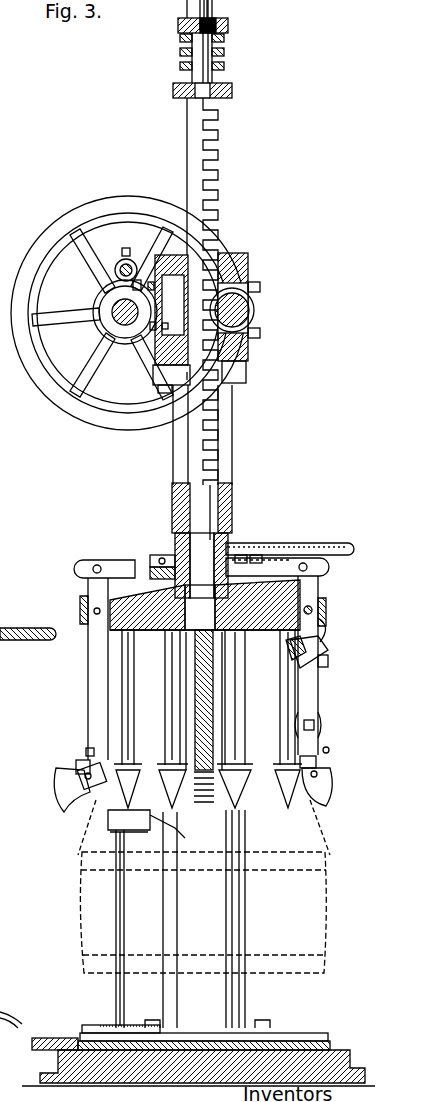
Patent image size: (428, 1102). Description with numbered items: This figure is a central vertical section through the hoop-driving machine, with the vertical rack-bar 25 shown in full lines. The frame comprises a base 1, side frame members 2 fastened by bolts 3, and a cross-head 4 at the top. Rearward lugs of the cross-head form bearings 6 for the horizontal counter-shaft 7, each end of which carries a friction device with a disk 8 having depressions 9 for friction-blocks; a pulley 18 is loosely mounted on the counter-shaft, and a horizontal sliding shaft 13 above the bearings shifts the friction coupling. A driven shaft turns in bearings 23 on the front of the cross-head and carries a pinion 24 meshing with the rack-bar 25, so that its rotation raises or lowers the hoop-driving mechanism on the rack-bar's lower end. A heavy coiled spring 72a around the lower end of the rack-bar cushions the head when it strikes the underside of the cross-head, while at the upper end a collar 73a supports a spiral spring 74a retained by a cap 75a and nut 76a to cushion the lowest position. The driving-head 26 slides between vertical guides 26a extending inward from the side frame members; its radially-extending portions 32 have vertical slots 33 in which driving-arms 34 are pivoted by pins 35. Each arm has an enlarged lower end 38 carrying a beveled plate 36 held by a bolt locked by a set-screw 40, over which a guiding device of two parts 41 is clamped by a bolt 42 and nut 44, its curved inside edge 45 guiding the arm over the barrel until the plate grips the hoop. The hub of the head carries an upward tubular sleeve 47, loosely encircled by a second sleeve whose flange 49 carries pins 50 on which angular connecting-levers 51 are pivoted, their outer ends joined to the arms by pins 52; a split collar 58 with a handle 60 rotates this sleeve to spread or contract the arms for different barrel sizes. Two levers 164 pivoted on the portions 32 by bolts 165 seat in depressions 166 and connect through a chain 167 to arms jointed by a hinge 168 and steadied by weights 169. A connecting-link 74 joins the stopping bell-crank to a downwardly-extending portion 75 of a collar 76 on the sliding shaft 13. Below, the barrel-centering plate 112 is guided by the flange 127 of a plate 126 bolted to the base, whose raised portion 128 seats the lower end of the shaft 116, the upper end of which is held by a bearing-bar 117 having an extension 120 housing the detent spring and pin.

The base 1 is at (58, 1064).
The side frame members 2 is at (203, 912).
The bolts 3 is at (207, 1013).
The top piece or cross-head 4 is at (242, 262).
The bearings 6 is at (108, 326).
The counter-shaft 7 is at (102, 298).
The disk 8 is at (102, 313).
The depressions 9 is at (11, 1008).
The horizontal sliding shaft 13 is at (121, 256).
The pulley 18 is at (128, 311).
The bearings 23 is at (256, 285).
The pinion 24 is at (248, 310).
The vertical rack-bar 25 is at (189, 291).
The driving-head or spider 26 is at (205, 618).
The vertically-extending guides 26a is at (203, 732).
The radially-extending portions 32 is at (80, 612).
The vertical slot 33 is at (86, 600).
The vertical driving-arm 34 is at (88, 703).
The pin 35 is at (94, 615).
The plate 36 is at (76, 767).
The enlarged lower end 38 is at (152, 766).
The set-screw 40 is at (86, 752).
The parts of guiding device 41 is at (203, 794).
The bolt 42 is at (318, 776).
The nut 44 is at (80, 782).
The curved inside edge 45 is at (310, 812).
The tubular portion or sleeve 47 is at (176, 556).
The flange 49 is at (152, 572).
The pins 50 is at (12, 549).
The angular-shaped connecting-levers 51 is at (83, 569).
The pins 52 is at (99, 557).
The split collar 58 is at (152, 560).
The operating handle or lever 60 is at (300, 547).
The heavy coiled spring 72a is at (233, 492).
The collar 73a is at (185, 85).
The connecting-link 74 is at (162, 352).
The spiral spring 74a is at (222, 58).
The downwardly-extending portion 75 is at (145, 298).
The cap 75a is at (185, 16).
The collar 76 is at (140, 280).
The nut 76a is at (229, 15).
The metal plate 112 is at (55, 1034).
The upwardly-extending shaft 116 is at (180, 919).
The bearing-bar 117 is at (136, 828).
The extension 120 is at (183, 835).
The plate 126 is at (330, 1046).
The downwardly-extending flange 127 is at (318, 1034).
The raised portion 128 is at (98, 1025).
The levers 164 is at (330, 628).
The bolts 165 is at (328, 613).
The depressions 166 is at (28, 617).
The chain 167 is at (330, 640).
The hinge 168 is at (344, 675).
The weights 169 is at (325, 723).